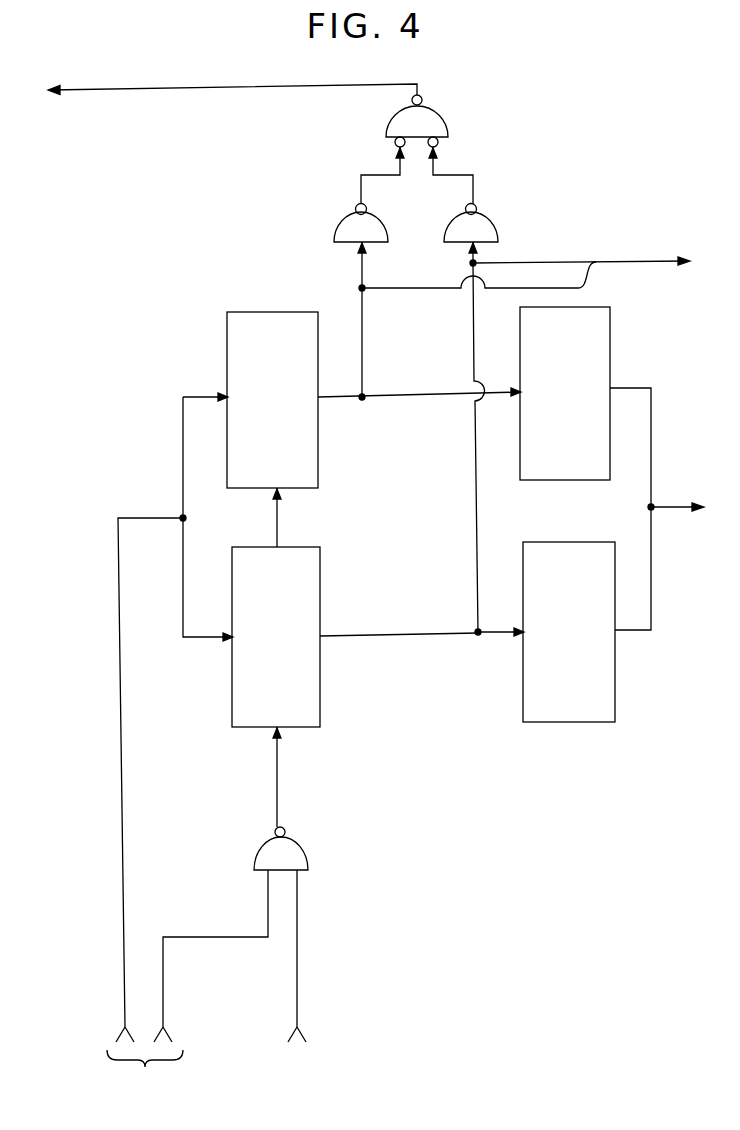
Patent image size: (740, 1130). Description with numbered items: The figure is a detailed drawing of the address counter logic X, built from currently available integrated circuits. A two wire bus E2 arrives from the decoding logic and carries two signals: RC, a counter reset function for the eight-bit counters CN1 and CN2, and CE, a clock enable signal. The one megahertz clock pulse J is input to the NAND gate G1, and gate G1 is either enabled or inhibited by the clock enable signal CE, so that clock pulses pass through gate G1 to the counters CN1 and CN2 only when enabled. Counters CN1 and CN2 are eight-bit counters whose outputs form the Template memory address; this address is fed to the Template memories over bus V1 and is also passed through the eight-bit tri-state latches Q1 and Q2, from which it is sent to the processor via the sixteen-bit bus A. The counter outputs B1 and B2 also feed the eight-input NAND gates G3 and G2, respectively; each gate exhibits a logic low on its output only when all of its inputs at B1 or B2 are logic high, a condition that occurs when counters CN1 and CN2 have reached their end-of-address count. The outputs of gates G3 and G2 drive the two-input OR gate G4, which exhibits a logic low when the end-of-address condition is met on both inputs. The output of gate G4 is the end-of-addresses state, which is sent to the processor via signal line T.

The signal line T is at (57, 88).
The two input OR gate G4 is at (443, 127).
The 8 input nand gate G3 is at (341, 223).
The 8 input nand gate G2 is at (490, 223).
The bus V1 is at (672, 258).
The inputs B1 is at (372, 402).
The 8 bit counter CN1 is at (227, 353).
The 8 bit latch Q1 is at (615, 351).
The 16 bit bus A is at (685, 505).
The inputs B2 is at (410, 640).
The 8 bit counter CN2 is at (320, 618).
The 8 bit latch Q2 is at (615, 670).
The address counter logic X is at (468, 787).
The counter reset signal RC is at (125, 818).
The Nand gate G1 is at (308, 846).
The clock enable signal CE is at (225, 937).
The clock pulse J is at (297, 975).
The two wire bus E2 is at (145, 1075).